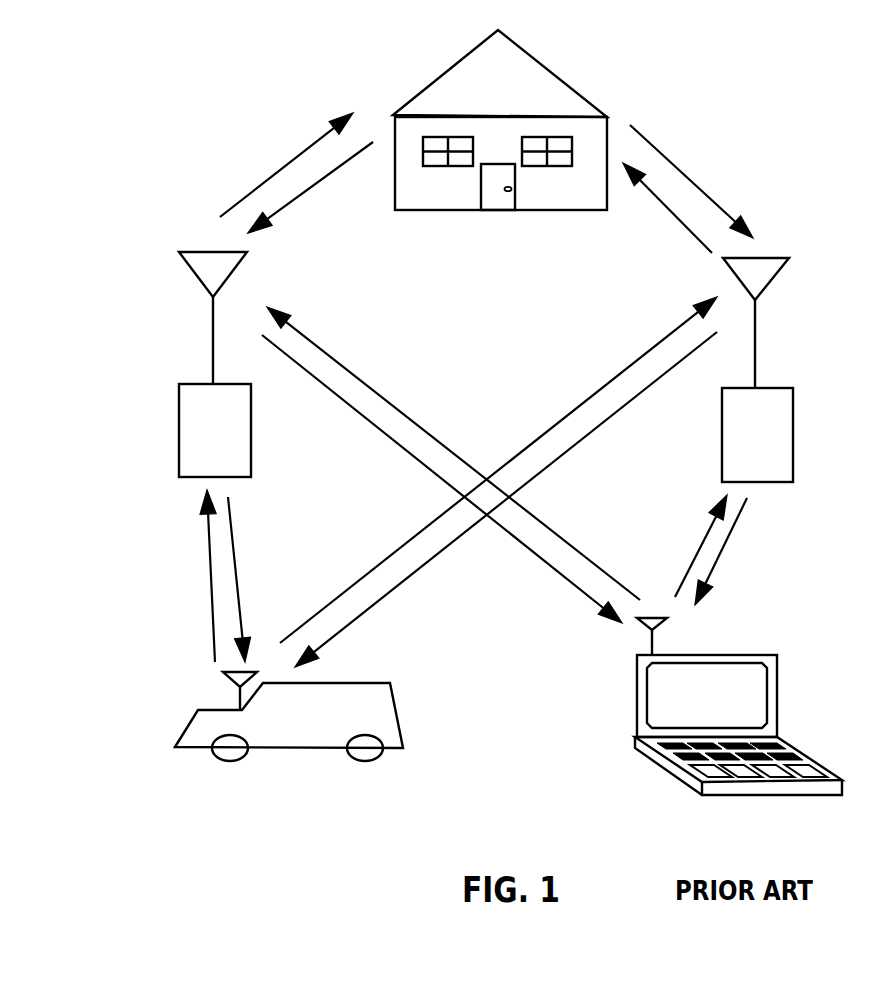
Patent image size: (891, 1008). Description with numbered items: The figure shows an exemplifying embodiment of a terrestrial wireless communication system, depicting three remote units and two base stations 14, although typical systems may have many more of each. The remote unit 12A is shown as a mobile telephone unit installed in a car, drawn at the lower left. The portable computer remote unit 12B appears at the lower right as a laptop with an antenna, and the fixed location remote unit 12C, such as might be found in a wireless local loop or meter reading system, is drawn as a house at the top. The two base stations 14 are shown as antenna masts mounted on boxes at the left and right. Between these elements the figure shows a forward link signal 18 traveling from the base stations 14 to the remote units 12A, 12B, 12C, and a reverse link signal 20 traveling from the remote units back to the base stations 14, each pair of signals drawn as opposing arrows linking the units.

The remote unit 12A is at (397, 702).
The portable computer remote unit 12B is at (758, 650).
The fixed location remote unit 12C is at (548, 68).
The base station 14 is at (187, 382).
The forward link signal 18 is at (280, 170).
The reverse link signal 20 is at (317, 185).